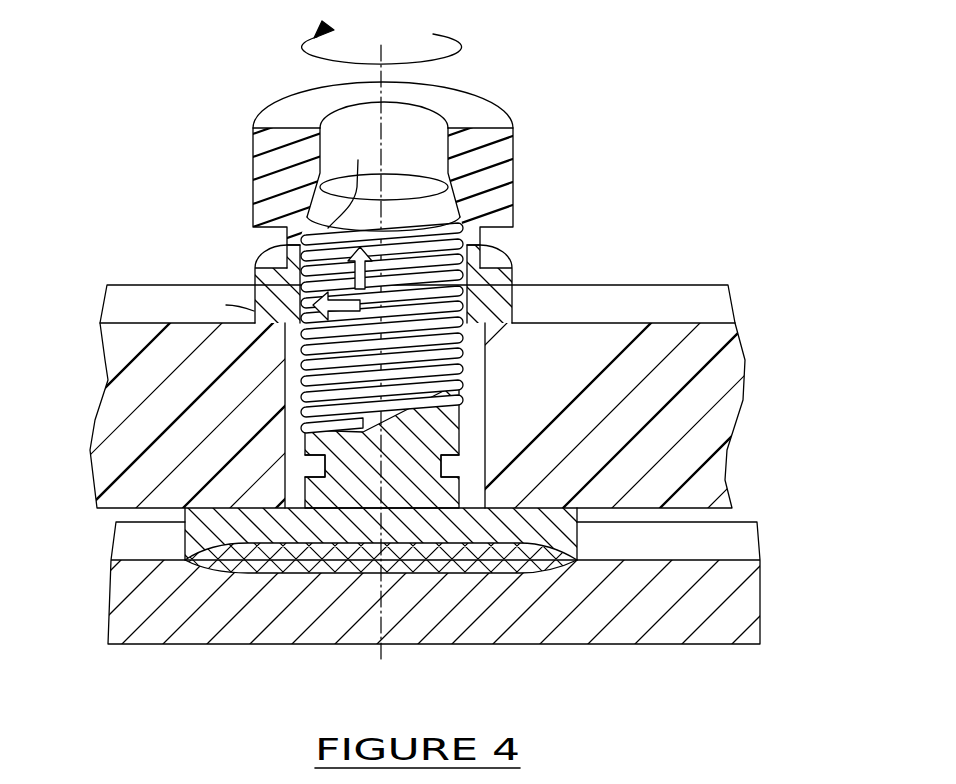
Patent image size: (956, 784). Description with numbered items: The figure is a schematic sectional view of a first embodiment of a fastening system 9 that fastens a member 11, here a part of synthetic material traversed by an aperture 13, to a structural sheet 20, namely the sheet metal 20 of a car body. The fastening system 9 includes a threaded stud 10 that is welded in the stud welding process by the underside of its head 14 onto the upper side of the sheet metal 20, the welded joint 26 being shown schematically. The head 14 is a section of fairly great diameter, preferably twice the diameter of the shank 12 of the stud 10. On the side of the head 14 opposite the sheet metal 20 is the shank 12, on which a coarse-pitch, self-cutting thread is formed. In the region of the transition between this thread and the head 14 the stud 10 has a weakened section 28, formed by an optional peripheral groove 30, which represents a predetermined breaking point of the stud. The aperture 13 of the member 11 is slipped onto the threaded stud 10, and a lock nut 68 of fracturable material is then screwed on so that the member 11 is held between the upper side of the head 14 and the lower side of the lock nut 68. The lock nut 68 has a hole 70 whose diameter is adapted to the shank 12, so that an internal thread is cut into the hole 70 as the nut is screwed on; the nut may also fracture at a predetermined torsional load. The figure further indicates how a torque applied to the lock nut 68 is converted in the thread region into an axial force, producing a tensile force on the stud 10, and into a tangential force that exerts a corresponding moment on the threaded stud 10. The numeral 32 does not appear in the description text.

The fastening system 9 is at (446, 356).
The threaded stud 10 is at (415, 462).
The member 11 is at (697, 352).
The shank 12 is at (485, 242).
The aperture 13 is at (468, 408).
The head 14 is at (203, 529).
The sheet metal 20 is at (127, 644).
The welded joint 26 is at (268, 574).
The weakened section 28 is at (455, 470).
The peripheral groove 30 is at (300, 466).
The tool wall 32 is at (262, 152).
The lock nut 68 is at (393, 169).
The hole 70 is at (418, 133).